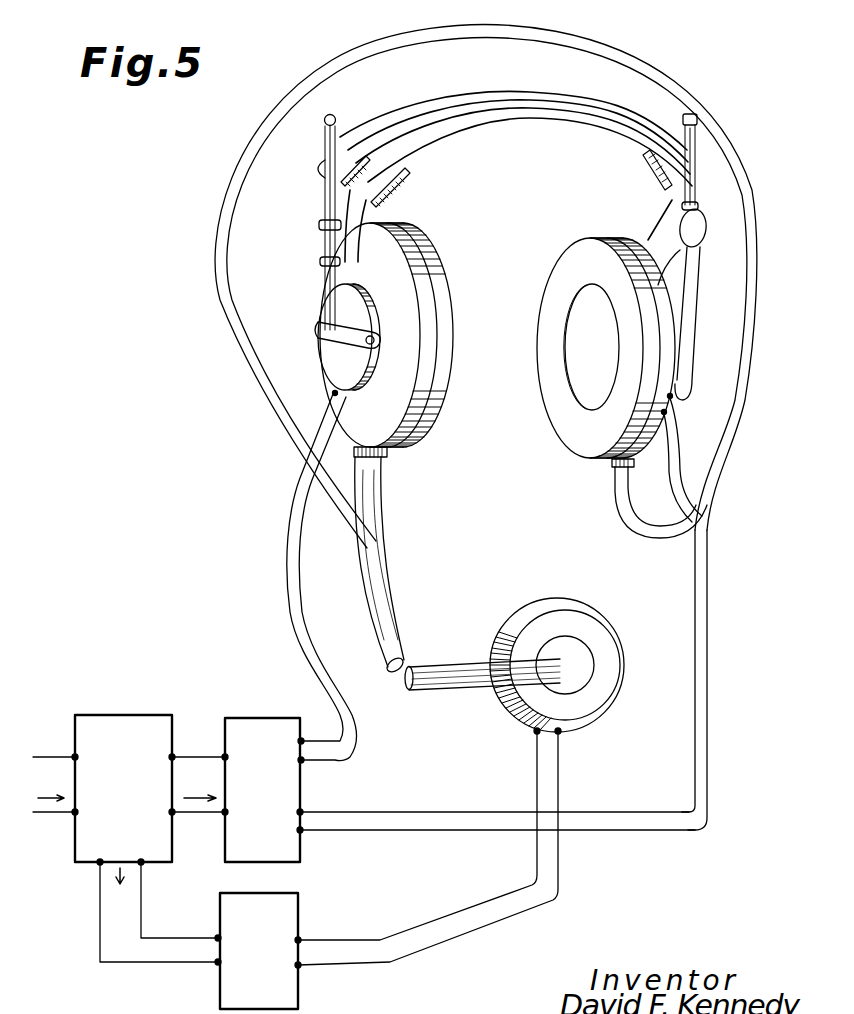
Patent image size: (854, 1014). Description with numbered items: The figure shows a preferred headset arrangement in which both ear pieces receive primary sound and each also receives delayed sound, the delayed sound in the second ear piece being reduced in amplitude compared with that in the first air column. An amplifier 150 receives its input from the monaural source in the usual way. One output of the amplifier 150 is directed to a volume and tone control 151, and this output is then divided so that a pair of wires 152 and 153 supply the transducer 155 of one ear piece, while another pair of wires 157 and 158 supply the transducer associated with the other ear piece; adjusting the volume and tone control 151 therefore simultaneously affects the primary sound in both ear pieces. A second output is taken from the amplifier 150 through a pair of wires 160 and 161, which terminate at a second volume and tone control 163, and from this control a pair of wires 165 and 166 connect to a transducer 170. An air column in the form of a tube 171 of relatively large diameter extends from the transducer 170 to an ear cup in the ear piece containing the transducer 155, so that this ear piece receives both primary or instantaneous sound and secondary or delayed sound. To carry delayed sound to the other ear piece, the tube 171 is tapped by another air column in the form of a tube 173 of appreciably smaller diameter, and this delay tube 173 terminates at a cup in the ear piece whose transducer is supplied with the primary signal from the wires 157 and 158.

The amplifier 150 is at (108, 714).
The volume and tone control 151 is at (243, 720).
The wire 152 is at (289, 520).
The wire 153 is at (300, 557).
The transducer 155 is at (376, 360).
The wire 157 is at (602, 837).
The wire 158 is at (423, 812).
The wire 160 is at (118, 963).
The wire 161 is at (142, 912).
The volume and tone control 163 is at (298, 898).
The wire 165 is at (520, 907).
The wire 166 is at (414, 925).
The transducer 170 is at (577, 612).
The tube 171 is at (388, 612).
The tube 173 is at (222, 292).